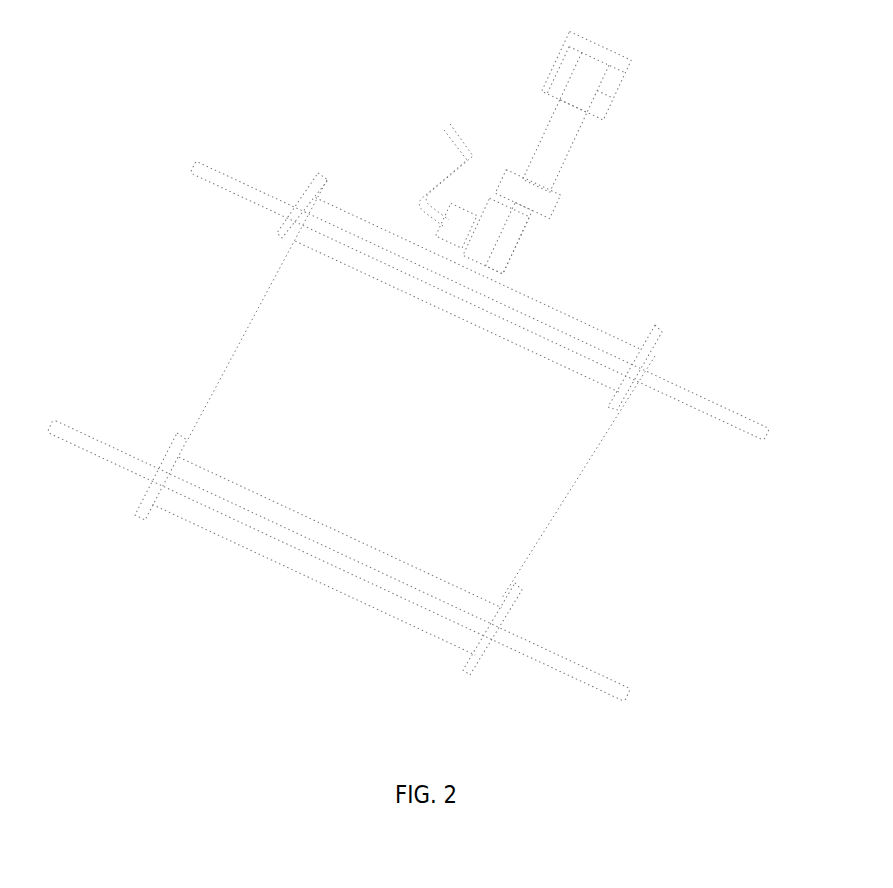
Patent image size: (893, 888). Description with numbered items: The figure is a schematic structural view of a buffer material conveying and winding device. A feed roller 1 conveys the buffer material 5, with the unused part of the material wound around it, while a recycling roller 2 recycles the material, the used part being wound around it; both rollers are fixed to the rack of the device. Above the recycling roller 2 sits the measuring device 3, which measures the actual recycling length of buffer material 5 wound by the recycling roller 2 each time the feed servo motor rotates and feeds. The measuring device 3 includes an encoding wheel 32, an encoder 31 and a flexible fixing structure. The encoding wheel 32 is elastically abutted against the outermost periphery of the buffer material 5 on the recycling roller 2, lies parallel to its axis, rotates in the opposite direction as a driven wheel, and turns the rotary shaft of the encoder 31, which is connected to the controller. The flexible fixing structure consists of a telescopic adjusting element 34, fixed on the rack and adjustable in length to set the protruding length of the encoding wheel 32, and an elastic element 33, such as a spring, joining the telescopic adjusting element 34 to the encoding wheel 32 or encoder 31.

The feed roller 1 is at (510, 657).
The recycling roller 2 is at (648, 390).
The buffer material 5 is at (523, 503).
The measuring device 3 is at (556, 194).
The encoder 31 is at (443, 175).
The encoding wheel 32 is at (517, 237).
The elastic element 33 is at (528, 150).
The telescopic adjusting element 34 is at (563, 137).